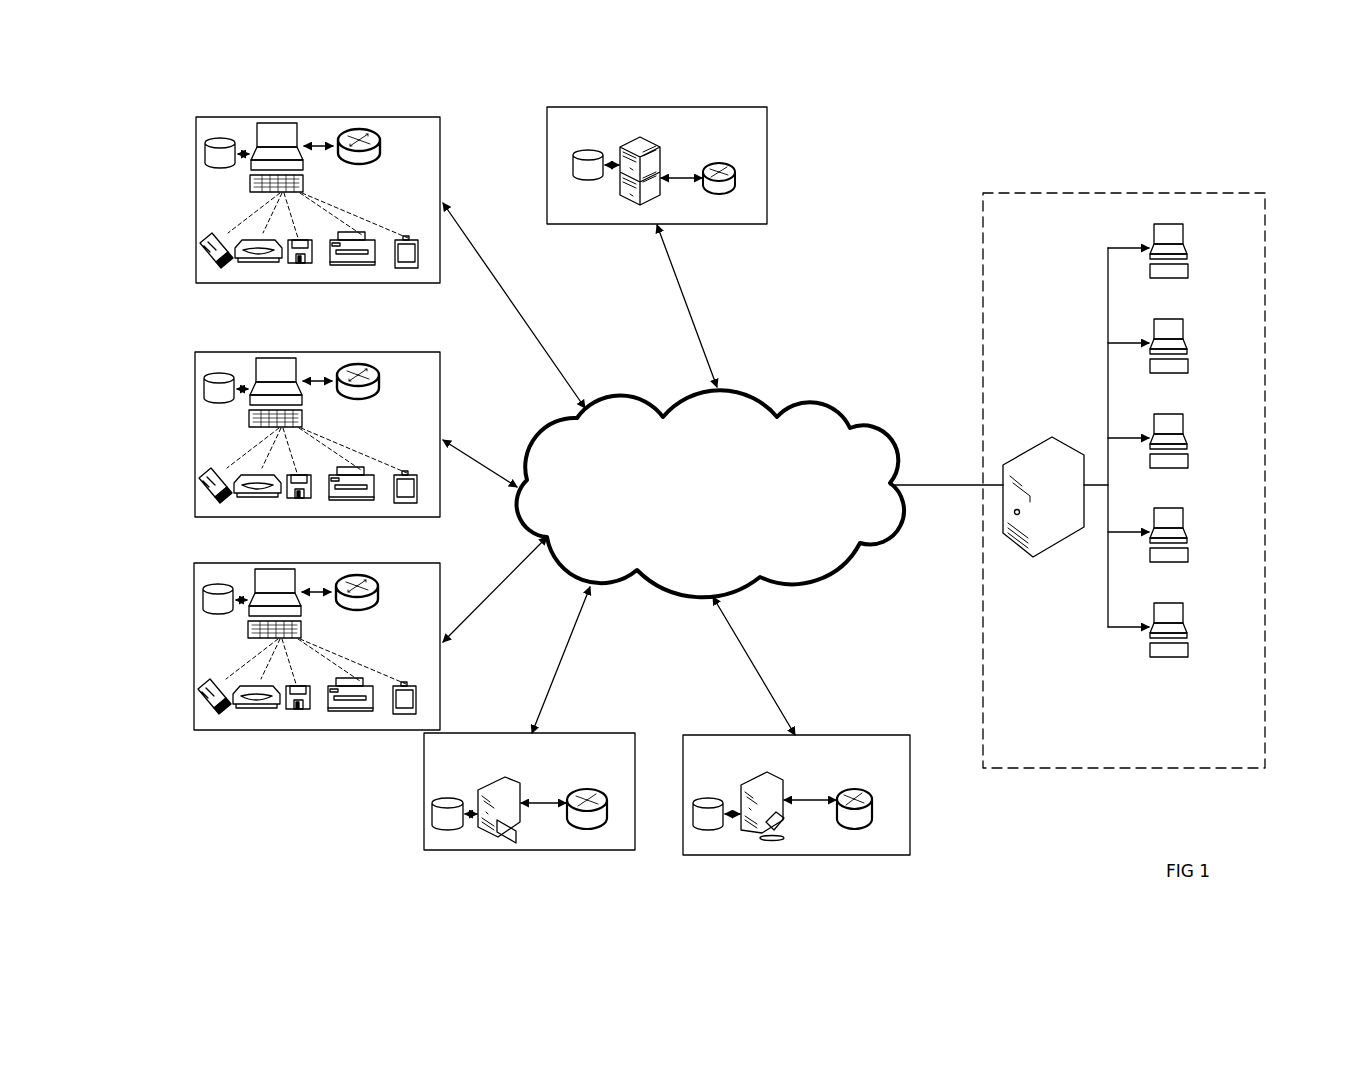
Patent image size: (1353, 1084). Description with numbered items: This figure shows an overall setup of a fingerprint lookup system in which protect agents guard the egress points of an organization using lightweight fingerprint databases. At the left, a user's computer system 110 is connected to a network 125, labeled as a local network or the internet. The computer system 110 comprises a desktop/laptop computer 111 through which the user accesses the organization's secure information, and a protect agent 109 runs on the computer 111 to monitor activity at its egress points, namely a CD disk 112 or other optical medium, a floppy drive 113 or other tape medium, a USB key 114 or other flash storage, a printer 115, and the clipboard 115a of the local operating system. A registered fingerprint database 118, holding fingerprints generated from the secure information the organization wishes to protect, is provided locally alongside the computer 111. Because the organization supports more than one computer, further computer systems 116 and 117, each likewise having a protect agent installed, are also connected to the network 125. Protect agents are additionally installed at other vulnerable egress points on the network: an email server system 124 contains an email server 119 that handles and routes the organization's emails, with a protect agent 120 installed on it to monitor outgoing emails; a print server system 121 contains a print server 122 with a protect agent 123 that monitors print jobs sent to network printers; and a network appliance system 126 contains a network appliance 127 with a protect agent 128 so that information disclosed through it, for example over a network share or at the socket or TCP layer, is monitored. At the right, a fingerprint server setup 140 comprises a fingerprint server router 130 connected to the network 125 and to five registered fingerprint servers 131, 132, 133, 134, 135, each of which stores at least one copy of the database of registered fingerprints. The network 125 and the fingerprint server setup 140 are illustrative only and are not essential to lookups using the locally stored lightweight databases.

The protect agent 109 is at (383, 152).
The computer system 110 is at (292, 206).
The desktop/laptop computer 111 is at (257, 136).
The CD disk 112 is at (230, 268).
The floppy drive 113 is at (273, 263).
The USB key 114 is at (310, 263).
The printer 115 is at (373, 265).
The clipboard 115a is at (420, 268).
The computer system 116 is at (195, 405).
The computer system 117 is at (194, 617).
The registered fingerprint database 118 is at (208, 157).
The email server 119 is at (505, 777).
The protect agent 120 is at (575, 789).
The print server 121 is at (796, 811).
The print server 122 is at (767, 777).
The protect agent 123 is at (841, 790).
The email server system 124 is at (529, 810).
The network 125 is at (790, 400).
The network appliance system 126 is at (657, 192).
The network appliance 127 is at (640, 143).
The protect agent 128 is at (713, 163).
The fingerprint server router 130 is at (1060, 433).
The registered fingerprint server 131 is at (1188, 272).
The registered fingerprint server 132 is at (1188, 369).
The registered fingerprint server 133 is at (1188, 455).
The registered fingerprint server 134 is at (1188, 553).
The registered fingerprint server 135 is at (1188, 653).
The fingerprint server setup 140 is at (1130, 193).